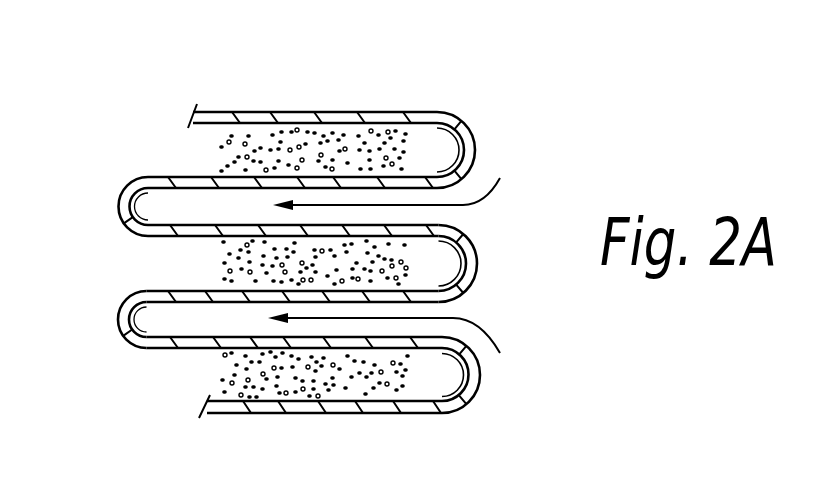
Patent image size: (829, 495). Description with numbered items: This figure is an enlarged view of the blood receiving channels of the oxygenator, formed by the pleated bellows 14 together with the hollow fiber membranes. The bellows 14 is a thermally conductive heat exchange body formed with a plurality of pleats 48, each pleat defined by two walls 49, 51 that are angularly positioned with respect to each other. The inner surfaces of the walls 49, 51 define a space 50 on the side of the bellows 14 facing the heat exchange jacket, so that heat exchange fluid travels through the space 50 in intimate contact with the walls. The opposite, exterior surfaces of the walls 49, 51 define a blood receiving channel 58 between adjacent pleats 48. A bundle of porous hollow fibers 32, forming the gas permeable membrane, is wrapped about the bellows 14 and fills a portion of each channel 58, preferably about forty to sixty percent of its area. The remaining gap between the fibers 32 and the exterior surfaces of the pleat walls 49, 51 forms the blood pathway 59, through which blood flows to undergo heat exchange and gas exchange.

The bellows 14 is at (244, 105).
The hollow fibers 32 is at (332, 143).
The pleats 48 is at (120, 306).
The pleat wall 49 is at (153, 176).
The space 50 is at (150, 206).
The pleat wall 51 is at (150, 237).
The blood receiving channel 58 is at (424, 122).
The blood pathway 59 is at (448, 153).